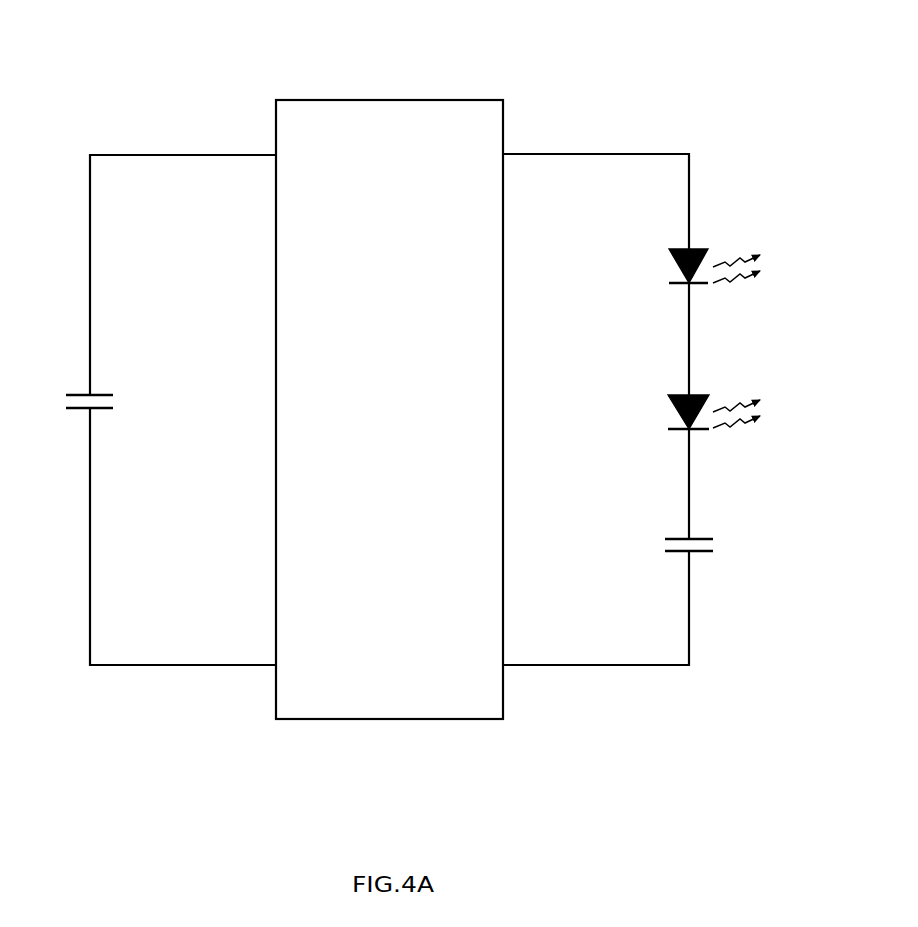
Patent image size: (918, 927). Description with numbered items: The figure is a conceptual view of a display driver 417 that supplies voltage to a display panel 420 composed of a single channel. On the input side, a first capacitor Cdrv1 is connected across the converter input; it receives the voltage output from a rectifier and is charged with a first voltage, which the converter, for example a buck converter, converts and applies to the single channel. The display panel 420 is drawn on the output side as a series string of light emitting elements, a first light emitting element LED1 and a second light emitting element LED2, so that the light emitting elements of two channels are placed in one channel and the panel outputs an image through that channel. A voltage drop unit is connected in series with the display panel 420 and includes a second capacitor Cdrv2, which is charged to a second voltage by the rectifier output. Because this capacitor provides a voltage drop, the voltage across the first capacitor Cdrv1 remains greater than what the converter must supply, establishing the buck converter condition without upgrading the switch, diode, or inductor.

The display driver 417 is at (88, 80).
The display panel 420 is at (727, 186).
The light emitting element LED1 is at (718, 255).
The light emitting element LED2 is at (719, 400).
The first capacitor Cdrv1 is at (70, 387).
The second capacitor Cdrv2 is at (708, 532).